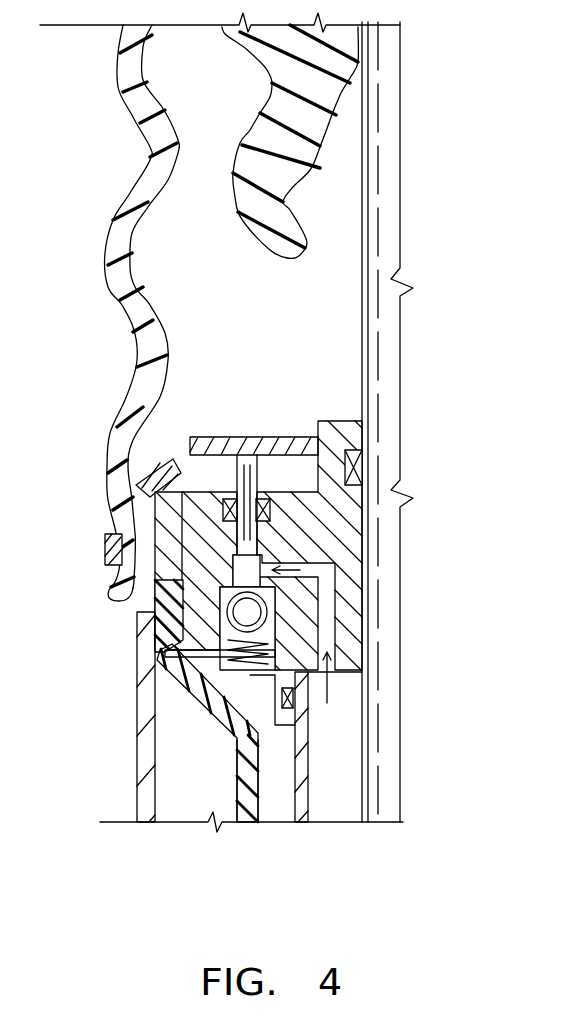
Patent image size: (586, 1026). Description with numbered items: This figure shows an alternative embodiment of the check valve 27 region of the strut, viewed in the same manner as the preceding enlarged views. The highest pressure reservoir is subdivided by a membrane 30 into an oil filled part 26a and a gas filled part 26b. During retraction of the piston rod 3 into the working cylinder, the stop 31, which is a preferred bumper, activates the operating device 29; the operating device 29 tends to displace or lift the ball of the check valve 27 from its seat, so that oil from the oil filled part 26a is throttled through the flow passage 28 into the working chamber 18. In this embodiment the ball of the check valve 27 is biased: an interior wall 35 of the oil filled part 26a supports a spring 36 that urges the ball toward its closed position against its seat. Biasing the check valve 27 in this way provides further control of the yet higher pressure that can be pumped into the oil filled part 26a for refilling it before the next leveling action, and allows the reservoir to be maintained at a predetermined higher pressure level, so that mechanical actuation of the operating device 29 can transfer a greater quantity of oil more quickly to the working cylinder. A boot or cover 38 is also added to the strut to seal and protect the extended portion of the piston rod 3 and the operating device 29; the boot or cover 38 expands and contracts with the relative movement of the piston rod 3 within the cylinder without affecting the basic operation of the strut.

The piston rod 3 is at (389, 228).
The boot or cover 38 is at (142, 190).
The stop 31 is at (263, 215).
The operating device 29 is at (243, 445).
The check valve 27 is at (205, 535).
The flow passage 28 is at (328, 628).
The spring 36 is at (160, 657).
The interior wall 35 is at (163, 672).
The oil filled part 26a is at (197, 718).
The gas filled part 26b is at (153, 787).
The membrane 30 is at (248, 783).
The working chamber 18 is at (340, 738).